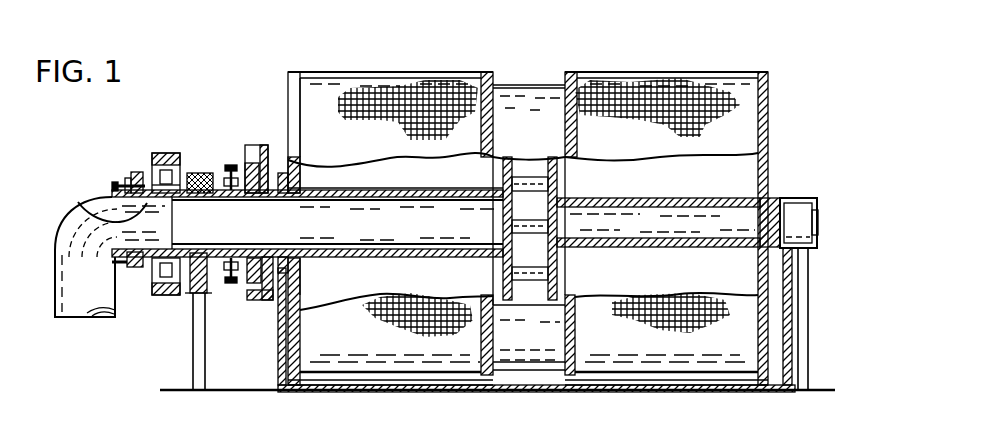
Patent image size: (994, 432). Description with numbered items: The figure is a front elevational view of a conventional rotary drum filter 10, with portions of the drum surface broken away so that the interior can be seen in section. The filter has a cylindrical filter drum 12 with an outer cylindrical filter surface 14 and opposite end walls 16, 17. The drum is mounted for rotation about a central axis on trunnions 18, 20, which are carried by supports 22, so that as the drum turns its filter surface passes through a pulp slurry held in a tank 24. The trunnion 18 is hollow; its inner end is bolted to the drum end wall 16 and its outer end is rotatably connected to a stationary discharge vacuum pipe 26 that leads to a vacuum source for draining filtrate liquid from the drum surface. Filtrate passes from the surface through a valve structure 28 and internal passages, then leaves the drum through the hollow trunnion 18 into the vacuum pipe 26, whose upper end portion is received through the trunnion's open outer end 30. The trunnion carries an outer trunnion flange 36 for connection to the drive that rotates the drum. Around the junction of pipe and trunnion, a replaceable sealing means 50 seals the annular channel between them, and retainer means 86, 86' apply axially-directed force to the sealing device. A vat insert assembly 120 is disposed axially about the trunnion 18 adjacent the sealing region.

The rotary drum filter 10 is at (377, 57).
The cylindrical filter drum 12 is at (528, 203).
The outer cylindrical filter surface 14 is at (440, 96).
The drum end wall 16 is at (289, 89).
The drum end wall 17 is at (769, 98).
The hollow trunnion 18 is at (212, 179).
The trunnion 20 is at (778, 197).
The supports 22 is at (802, 303).
The tank 24 is at (280, 320).
The discharge vacuum pipe 26 is at (60, 225).
The valve structure 28 is at (533, 86).
The open outer end 30 is at (117, 221).
The outer trunnion flange 36 is at (179, 165).
The replaceable sealing means 50 is at (131, 166).
The retainer means 86 is at (107, 195).
The bolt 86' is at (223, 178).
The vat insert assembly 120 is at (257, 139).